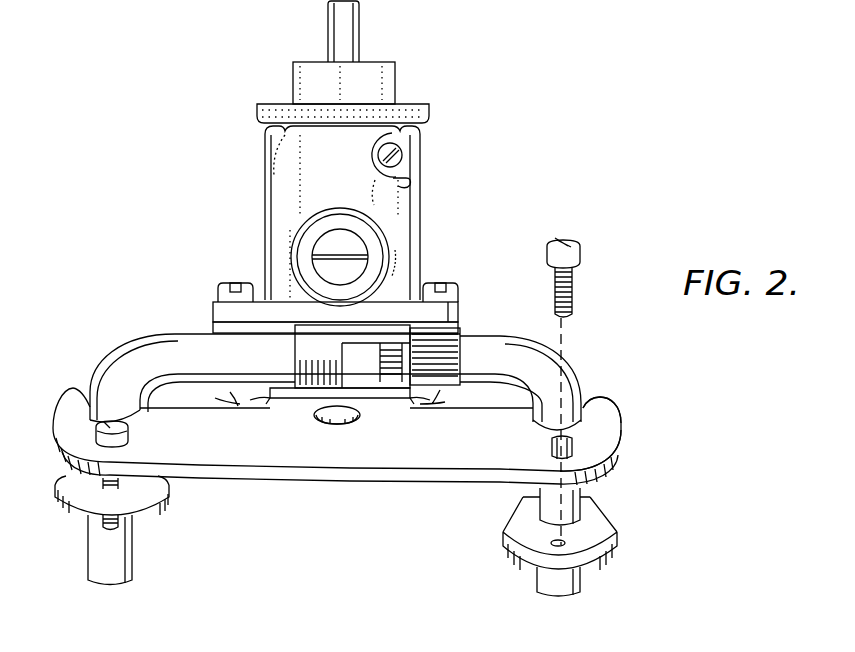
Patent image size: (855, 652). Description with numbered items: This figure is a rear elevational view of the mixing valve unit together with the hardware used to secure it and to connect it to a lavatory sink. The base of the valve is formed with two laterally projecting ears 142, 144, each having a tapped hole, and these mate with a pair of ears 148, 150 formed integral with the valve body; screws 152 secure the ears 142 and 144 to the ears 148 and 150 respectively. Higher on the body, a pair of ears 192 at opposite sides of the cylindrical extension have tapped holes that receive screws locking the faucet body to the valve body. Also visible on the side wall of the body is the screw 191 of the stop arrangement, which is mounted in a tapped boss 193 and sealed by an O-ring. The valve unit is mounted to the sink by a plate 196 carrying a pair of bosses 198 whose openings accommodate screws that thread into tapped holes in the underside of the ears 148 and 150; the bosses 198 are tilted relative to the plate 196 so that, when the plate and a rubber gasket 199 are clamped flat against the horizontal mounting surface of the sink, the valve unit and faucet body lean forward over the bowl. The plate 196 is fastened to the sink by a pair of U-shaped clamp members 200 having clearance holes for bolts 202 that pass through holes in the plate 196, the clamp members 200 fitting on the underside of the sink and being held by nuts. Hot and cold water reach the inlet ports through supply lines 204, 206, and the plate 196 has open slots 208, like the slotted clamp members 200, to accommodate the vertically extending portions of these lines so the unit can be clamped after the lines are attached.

The laterally projecting ear 142 is at (215, 303).
The laterally projecting ear 144 is at (458, 312).
The ear 148 is at (214, 326).
The ear 150 is at (460, 348).
The screws 152 is at (232, 283).
The screw 191 is at (401, 155).
The ears 192 is at (258, 114).
The tapped boss 193 is at (410, 183).
The plate 196 is at (416, 450).
The bosses 198 is at (250, 398).
The rubber gasket 199 is at (603, 479).
The U-shaped clamp members 200 is at (88, 497).
The bolts 202 is at (105, 421).
The supply line 204 is at (574, 382).
The supply line 206 is at (120, 362).
The open slots 208 is at (592, 400).